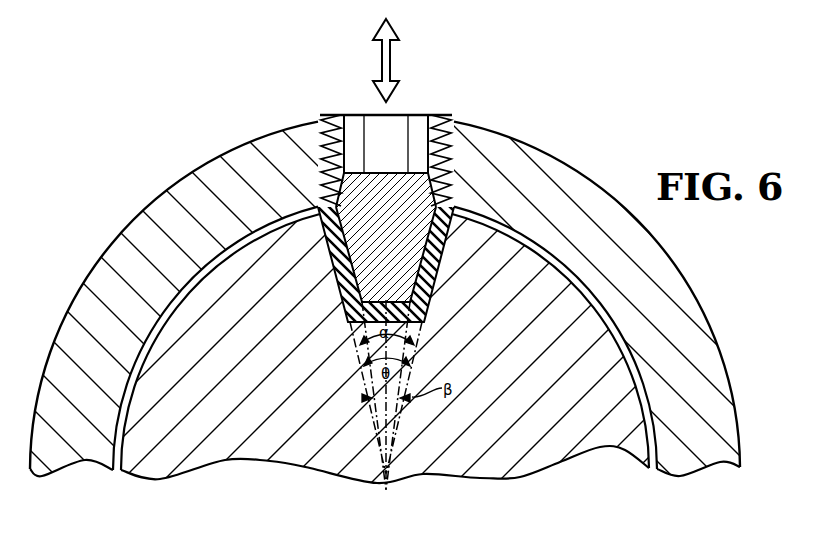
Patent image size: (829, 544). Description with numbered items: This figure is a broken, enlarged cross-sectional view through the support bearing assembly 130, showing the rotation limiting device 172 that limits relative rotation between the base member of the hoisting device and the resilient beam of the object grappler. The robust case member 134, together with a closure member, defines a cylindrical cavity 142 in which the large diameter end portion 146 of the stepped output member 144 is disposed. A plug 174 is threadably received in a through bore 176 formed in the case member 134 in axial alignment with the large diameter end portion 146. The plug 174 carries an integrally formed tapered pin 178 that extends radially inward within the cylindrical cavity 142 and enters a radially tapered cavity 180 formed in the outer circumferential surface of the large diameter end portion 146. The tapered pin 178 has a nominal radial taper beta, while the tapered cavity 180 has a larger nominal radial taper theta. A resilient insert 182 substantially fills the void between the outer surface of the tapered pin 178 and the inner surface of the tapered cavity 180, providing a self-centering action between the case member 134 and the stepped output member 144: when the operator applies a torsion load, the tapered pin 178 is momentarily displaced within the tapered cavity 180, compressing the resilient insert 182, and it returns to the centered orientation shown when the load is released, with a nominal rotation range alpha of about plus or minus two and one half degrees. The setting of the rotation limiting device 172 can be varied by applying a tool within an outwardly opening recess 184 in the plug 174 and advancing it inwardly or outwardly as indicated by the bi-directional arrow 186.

The support bearing assembly 130 is at (109, 185).
The case member 134 is at (86, 300).
The cylindrical cavity 142 is at (645, 380).
The stepped output member 144 is at (530, 483).
The large diameter end portion 146 is at (217, 456).
The rotation limiting device 172 is at (505, 128).
The plug 174 is at (432, 118).
The through bore 176 is at (322, 133).
The tapered pin 178 is at (381, 262).
The tapered cavity 180 is at (318, 208).
The resilient insert 182 is at (447, 218).
The outwardly opening recess 184 is at (351, 118).
The bi-directional arrow 186 is at (393, 60).